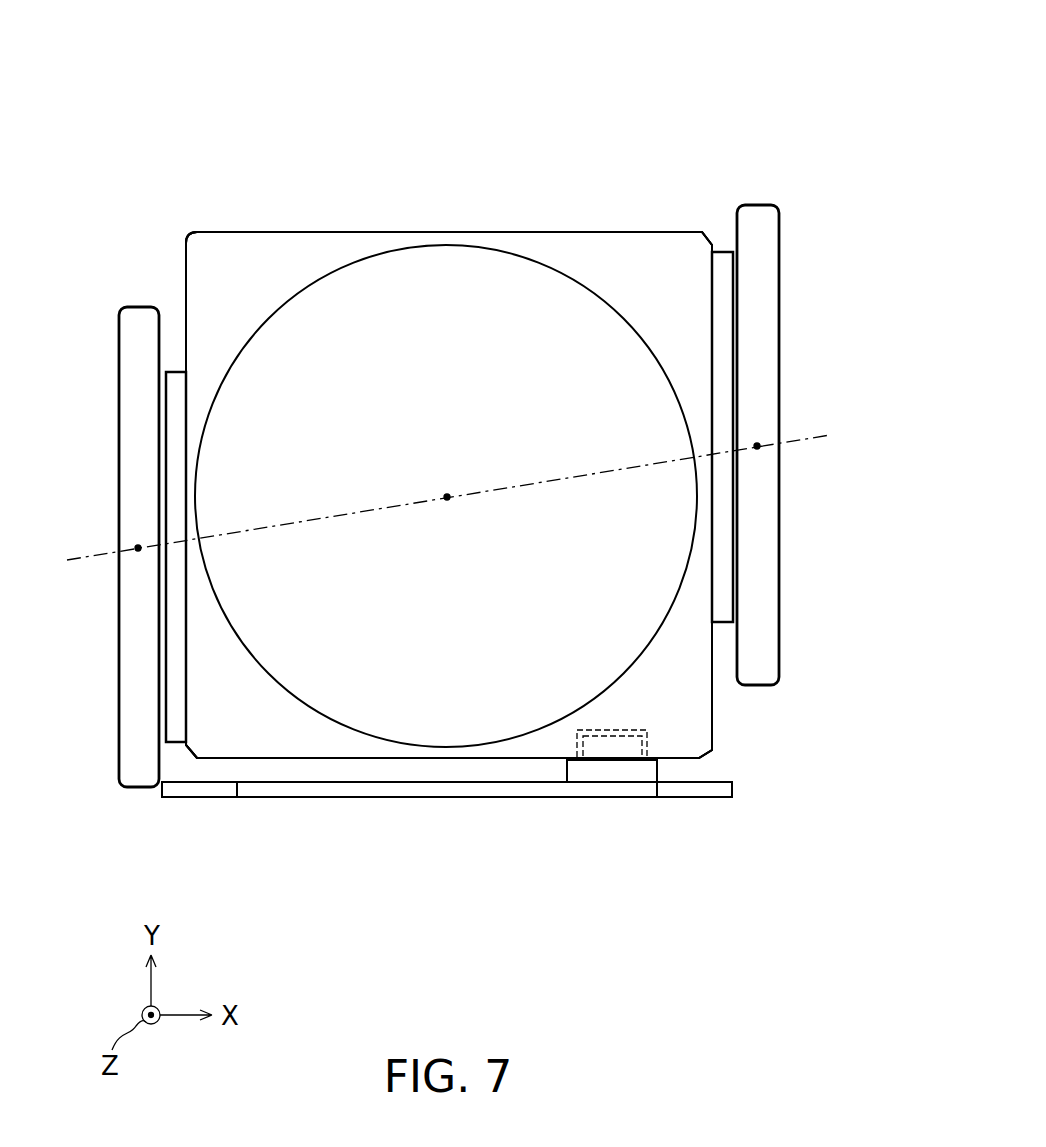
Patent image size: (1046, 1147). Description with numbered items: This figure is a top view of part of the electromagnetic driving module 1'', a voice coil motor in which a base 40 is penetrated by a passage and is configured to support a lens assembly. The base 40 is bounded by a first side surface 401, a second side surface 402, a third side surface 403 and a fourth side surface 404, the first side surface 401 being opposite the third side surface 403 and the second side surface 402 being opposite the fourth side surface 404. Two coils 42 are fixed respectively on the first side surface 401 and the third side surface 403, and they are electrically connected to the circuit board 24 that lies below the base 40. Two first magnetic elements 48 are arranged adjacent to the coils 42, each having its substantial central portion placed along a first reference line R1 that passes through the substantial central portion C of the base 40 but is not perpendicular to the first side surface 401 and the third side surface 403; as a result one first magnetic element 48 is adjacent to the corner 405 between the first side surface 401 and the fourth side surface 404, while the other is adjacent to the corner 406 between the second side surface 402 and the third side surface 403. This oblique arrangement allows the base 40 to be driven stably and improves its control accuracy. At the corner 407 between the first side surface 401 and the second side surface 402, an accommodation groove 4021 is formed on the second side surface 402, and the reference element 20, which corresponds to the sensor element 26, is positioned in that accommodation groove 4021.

The electromagnetic driving module 1'' is at (505, 385).
The reference element 20 is at (732, 790).
The circuit board 24 is at (377, 785).
The sensor element 26 is at (610, 773).
The base 40 is at (625, 255).
The first side surface 401 is at (713, 655).
The second side surface 402 is at (475, 762).
The accommodation groove 4021 is at (647, 730).
The third side surface 403 is at (184, 292).
The fourth side surface 404 is at (450, 232).
The corner 405 is at (705, 232).
The second corner 406 is at (188, 757).
The corner 407 is at (622, 748).
The coil 42 is at (173, 508).
The first magnetic element 48 is at (140, 655).
The optical axis center C is at (447, 494).
The first reference line R1 is at (469, 488).